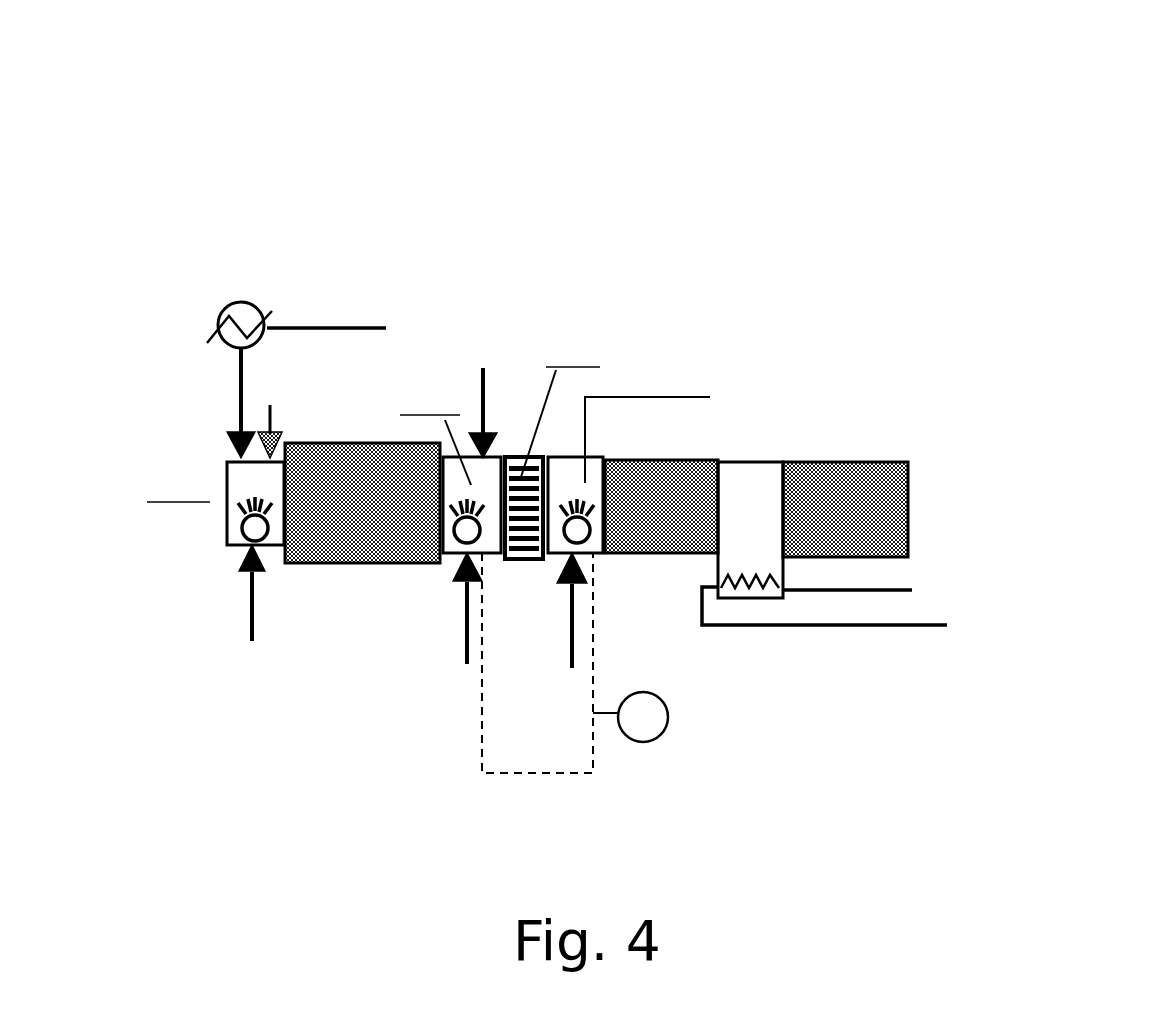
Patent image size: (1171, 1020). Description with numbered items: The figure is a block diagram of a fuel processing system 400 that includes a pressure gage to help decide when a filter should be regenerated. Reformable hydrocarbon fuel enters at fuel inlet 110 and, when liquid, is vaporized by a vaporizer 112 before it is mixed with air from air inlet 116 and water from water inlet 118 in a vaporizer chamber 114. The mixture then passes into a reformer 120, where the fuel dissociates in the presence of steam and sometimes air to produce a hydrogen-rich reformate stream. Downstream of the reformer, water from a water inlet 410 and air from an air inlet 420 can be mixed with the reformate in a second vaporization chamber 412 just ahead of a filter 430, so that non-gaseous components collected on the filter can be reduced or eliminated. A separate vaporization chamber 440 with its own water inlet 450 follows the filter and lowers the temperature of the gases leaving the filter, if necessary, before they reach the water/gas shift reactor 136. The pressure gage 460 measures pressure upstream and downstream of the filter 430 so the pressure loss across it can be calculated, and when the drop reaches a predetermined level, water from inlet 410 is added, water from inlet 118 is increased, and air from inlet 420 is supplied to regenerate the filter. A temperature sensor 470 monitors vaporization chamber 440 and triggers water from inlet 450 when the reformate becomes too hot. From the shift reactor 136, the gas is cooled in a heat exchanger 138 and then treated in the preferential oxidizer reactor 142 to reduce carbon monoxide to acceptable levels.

The fuel processing system 400 is at (594, 413).
The fuel inlet 110 is at (300, 318).
The vaporizer 112 is at (228, 302).
The vaporizer chamber 114 is at (145, 490).
The air inlet 116 is at (280, 413).
The water inlet 118 is at (248, 636).
The reformer 120 is at (330, 564).
The water/gas shift reactor 136 is at (637, 556).
The heat exchanger 138 is at (748, 478).
The preferential oxidizer reactor 142 is at (908, 497).
The water inlet 410 is at (462, 654).
The vaporization chamber 412 is at (450, 396).
The air inlet 420 is at (480, 371).
The filter 430 is at (563, 340).
The vaporization chamber 440 is at (584, 400).
The water inlet 450 is at (582, 652).
The pressure gage 460 is at (680, 718).
The temperature sensor 470 is at (1017, 404).